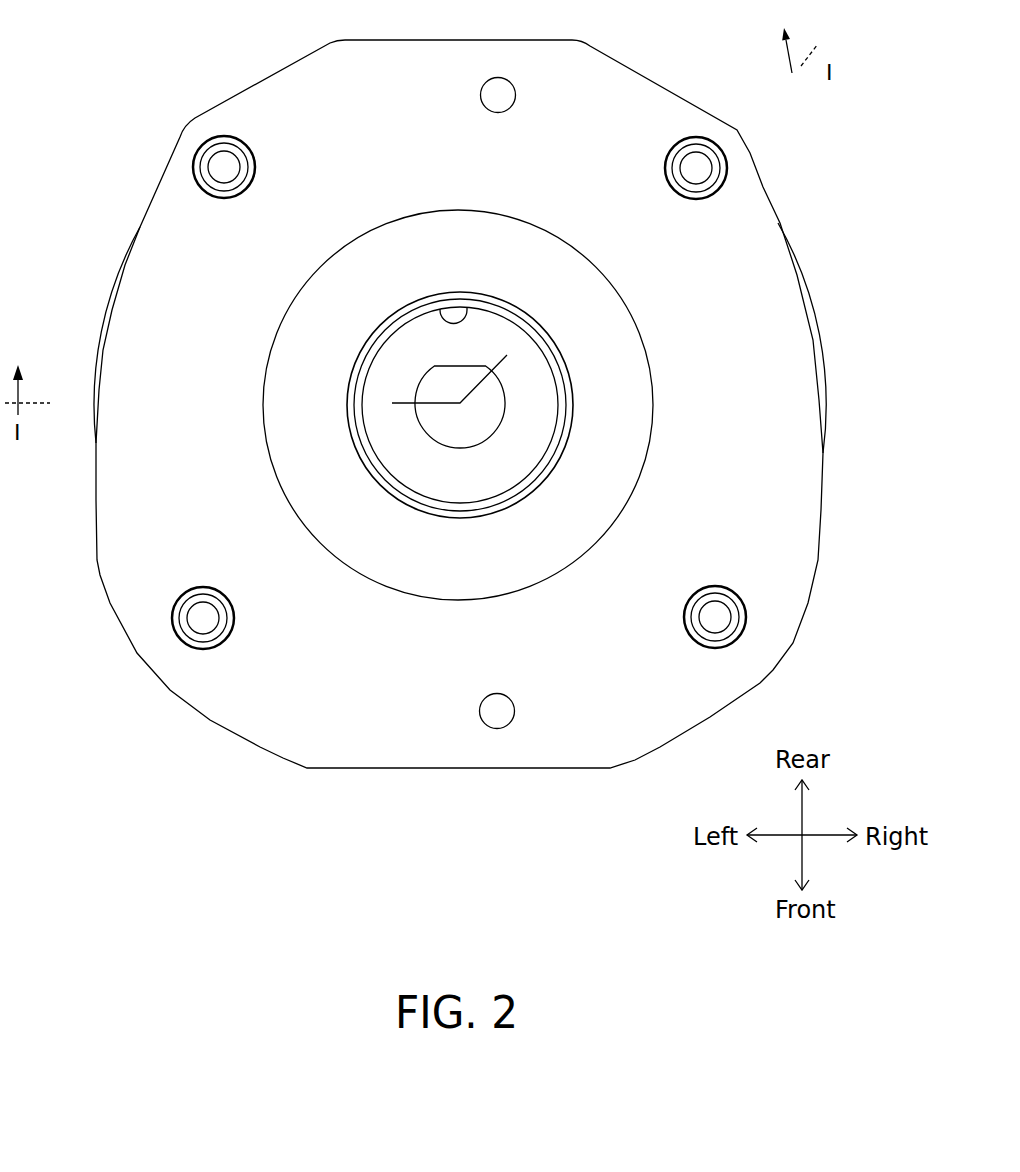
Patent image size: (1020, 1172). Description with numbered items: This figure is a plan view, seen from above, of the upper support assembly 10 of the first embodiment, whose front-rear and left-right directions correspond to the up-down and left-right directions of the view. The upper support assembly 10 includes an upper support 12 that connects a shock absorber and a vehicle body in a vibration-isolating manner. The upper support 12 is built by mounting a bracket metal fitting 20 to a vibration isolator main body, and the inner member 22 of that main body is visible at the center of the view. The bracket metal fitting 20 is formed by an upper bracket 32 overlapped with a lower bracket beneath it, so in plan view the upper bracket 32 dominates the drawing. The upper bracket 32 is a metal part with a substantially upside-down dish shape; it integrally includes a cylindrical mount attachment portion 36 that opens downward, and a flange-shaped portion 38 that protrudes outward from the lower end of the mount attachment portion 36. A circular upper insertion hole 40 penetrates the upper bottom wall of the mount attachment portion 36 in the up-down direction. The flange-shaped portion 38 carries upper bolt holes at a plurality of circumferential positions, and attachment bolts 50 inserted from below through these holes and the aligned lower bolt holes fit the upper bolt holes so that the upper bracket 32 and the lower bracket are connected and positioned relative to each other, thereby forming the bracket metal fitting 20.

The upper support assembly 10 is at (845, 232).
The upper support 12 is at (637, 52).
The bracket metal fitting 20 is at (255, 78).
The upper bracket 32 is at (248, 45).
The mount attachment portion 36 is at (360, 268).
The flange-shaped portion 38 is at (160, 297).
The upper insertion hole 40 is at (462, 312).
The inner member 22 is at (515, 432).
The attachment bolts 50 is at (223, 167).